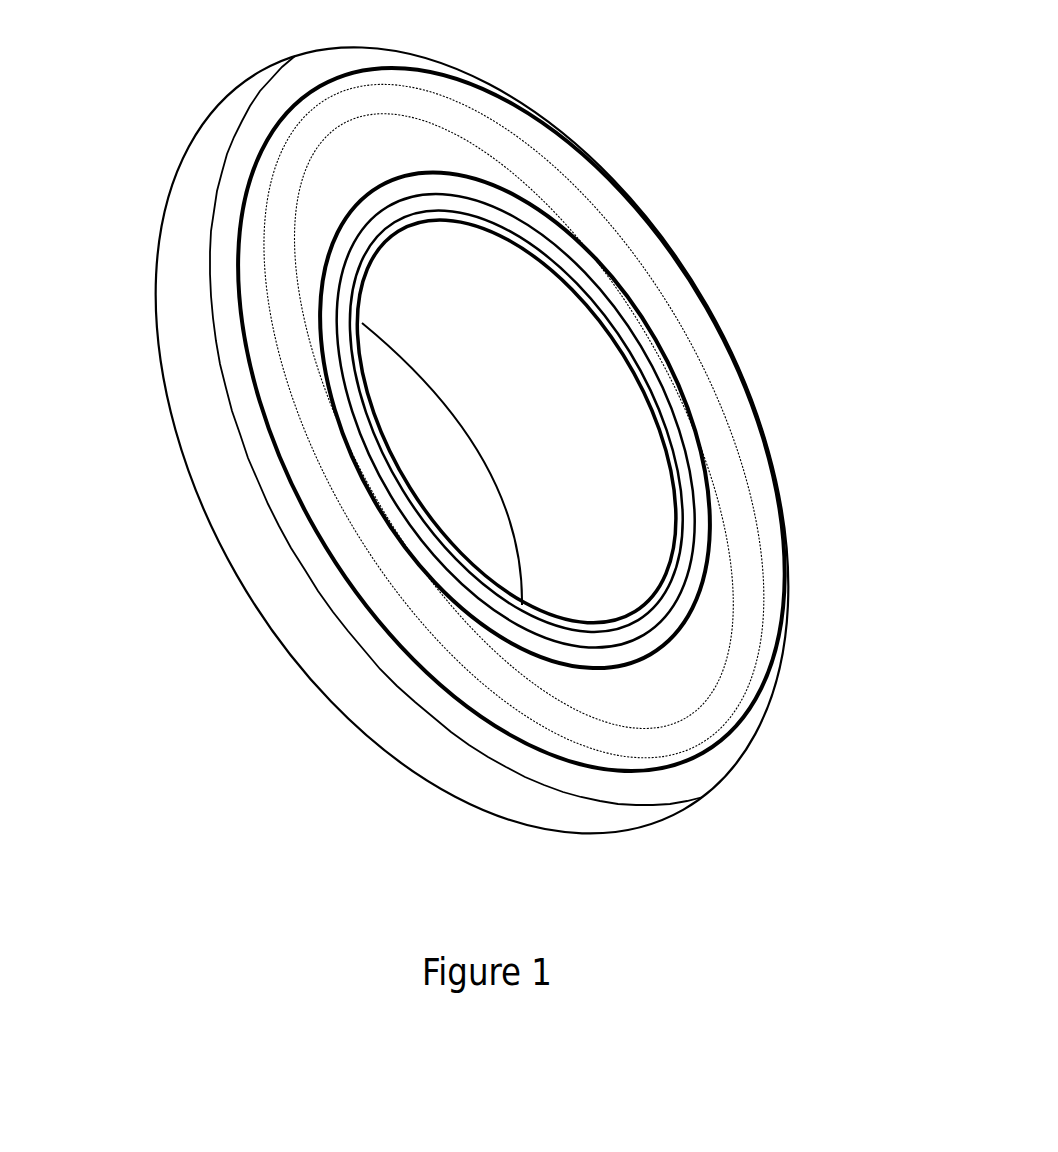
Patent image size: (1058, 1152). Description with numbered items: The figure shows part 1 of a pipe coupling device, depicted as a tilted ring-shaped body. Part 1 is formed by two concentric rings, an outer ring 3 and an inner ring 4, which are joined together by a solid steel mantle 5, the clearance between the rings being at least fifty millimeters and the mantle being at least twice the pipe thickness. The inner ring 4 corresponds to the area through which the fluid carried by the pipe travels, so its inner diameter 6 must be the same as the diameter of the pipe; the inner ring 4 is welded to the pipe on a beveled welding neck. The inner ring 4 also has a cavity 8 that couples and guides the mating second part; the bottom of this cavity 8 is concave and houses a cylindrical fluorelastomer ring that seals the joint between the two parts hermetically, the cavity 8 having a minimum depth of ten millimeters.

The part 1 is at (793, 229).
The outer ring 3 is at (232, 500).
The inner ring 4 is at (534, 220).
The solid steel mantle 5 is at (358, 141).
The inner diameter 6 is at (406, 265).
The cavity 8 is at (646, 623).